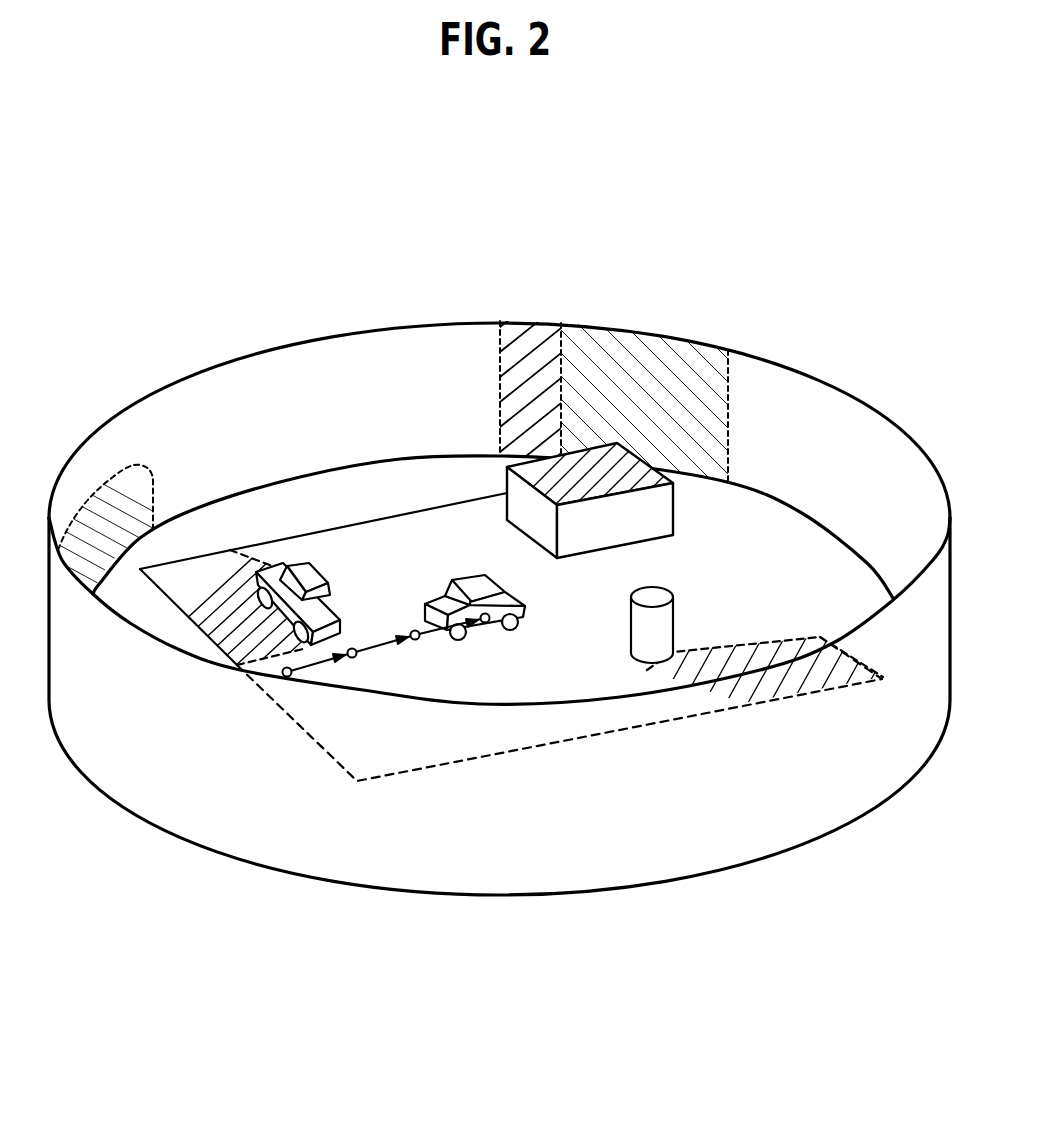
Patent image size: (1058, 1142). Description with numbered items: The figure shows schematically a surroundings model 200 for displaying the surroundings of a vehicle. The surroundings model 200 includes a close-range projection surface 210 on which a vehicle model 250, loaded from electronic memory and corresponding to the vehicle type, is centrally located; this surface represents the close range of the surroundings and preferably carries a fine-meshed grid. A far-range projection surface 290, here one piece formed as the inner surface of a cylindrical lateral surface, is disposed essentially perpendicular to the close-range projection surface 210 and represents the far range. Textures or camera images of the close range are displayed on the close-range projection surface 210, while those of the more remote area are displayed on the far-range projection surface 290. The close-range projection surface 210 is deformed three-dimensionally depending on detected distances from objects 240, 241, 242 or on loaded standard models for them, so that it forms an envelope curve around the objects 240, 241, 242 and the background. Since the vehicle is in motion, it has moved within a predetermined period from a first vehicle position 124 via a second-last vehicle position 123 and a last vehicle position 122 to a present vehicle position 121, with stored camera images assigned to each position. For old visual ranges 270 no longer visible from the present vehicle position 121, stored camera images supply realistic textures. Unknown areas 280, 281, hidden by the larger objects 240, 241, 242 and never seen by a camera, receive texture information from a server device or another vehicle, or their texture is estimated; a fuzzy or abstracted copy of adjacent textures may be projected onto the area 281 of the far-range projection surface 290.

The surroundings model 200 is at (289, 291).
The close-range projection surface 210 is at (452, 520).
The far-range projection surface 290 is at (836, 447).
The old visual range 270 is at (535, 350).
The unknown area 280 is at (618, 470).
The unknown area 281 is at (684, 377).
The object 240 is at (313, 582).
The vehicle model 250 is at (433, 600).
The object 241 is at (647, 517).
The object 242 is at (657, 597).
The present vehicle position 121 is at (488, 626).
The last vehicle position 122 is at (415, 641).
The second-last vehicle position 123 is at (352, 658).
The first vehicle position 124 is at (288, 677).